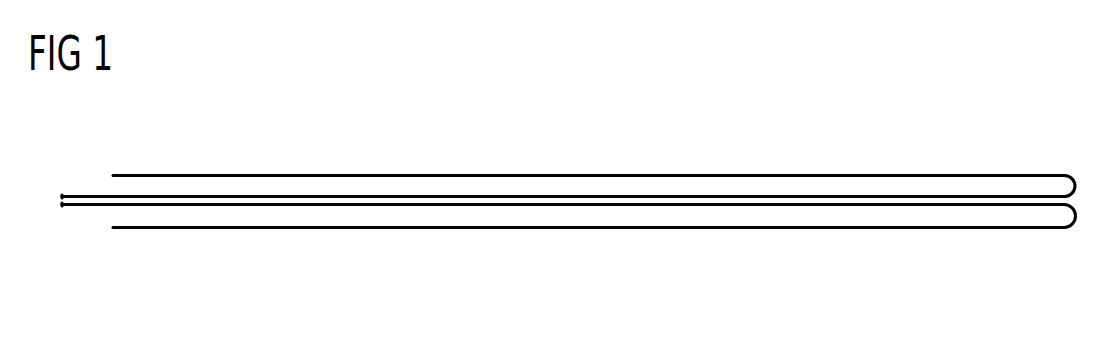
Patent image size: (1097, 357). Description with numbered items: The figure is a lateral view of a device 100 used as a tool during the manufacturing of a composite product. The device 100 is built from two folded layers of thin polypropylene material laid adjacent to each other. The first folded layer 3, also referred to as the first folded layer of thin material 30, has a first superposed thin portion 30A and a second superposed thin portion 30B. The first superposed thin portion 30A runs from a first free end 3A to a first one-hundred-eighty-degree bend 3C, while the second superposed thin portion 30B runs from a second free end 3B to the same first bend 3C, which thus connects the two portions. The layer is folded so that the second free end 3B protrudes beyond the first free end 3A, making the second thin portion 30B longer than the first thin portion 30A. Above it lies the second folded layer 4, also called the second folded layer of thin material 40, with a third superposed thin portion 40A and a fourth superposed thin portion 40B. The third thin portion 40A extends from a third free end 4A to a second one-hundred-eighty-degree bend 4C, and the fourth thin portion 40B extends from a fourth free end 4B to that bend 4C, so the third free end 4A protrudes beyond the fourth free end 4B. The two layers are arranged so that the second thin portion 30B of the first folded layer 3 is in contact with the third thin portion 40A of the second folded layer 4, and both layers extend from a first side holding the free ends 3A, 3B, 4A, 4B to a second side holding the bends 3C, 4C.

The device 100 is at (802, 117).
The second folded layer 4 is at (872, 175).
The third free end 4A is at (62, 197).
The fourth free end 4B is at (113, 175).
The second 180° bend 4C is at (1063, 174).
The second folded layer of thin material 40 is at (87, 197).
The third superposed thin portion 40A is at (731, 196).
The fourth superposed thin portion 40B is at (608, 175).
The first folded layer 3 is at (827, 228).
The first free end 3A is at (113, 228).
The second free end 3B is at (62, 206).
The first 180° bend 3C is at (1065, 229).
The first folded layer of thin material 30 is at (88, 207).
The first superposed thin portion 30A is at (630, 228).
The second superposed thin portion 30B is at (938, 205).